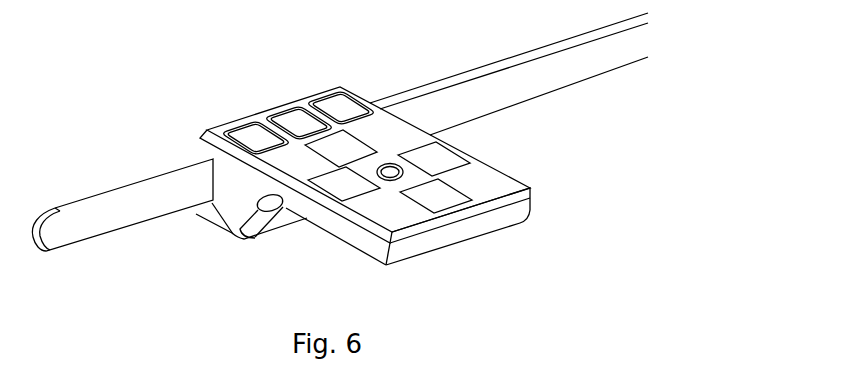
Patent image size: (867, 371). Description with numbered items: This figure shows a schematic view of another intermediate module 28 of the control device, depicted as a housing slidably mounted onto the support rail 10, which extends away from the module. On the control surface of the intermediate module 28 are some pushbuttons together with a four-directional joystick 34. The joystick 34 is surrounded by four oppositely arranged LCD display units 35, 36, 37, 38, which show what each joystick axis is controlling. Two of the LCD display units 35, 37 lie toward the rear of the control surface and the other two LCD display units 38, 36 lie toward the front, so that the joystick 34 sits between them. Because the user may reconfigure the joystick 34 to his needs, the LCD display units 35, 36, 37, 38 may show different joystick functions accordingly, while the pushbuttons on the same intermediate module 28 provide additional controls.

The support rail 10 is at (82, 226).
The intermediate module 28 is at (263, 118).
The four-directional joystick 34 is at (390, 162).
The LCD display unit 35 is at (343, 136).
The LCD display unit 36 is at (440, 197).
The LCD display unit 37 is at (436, 157).
The LCD display unit 38 is at (337, 187).